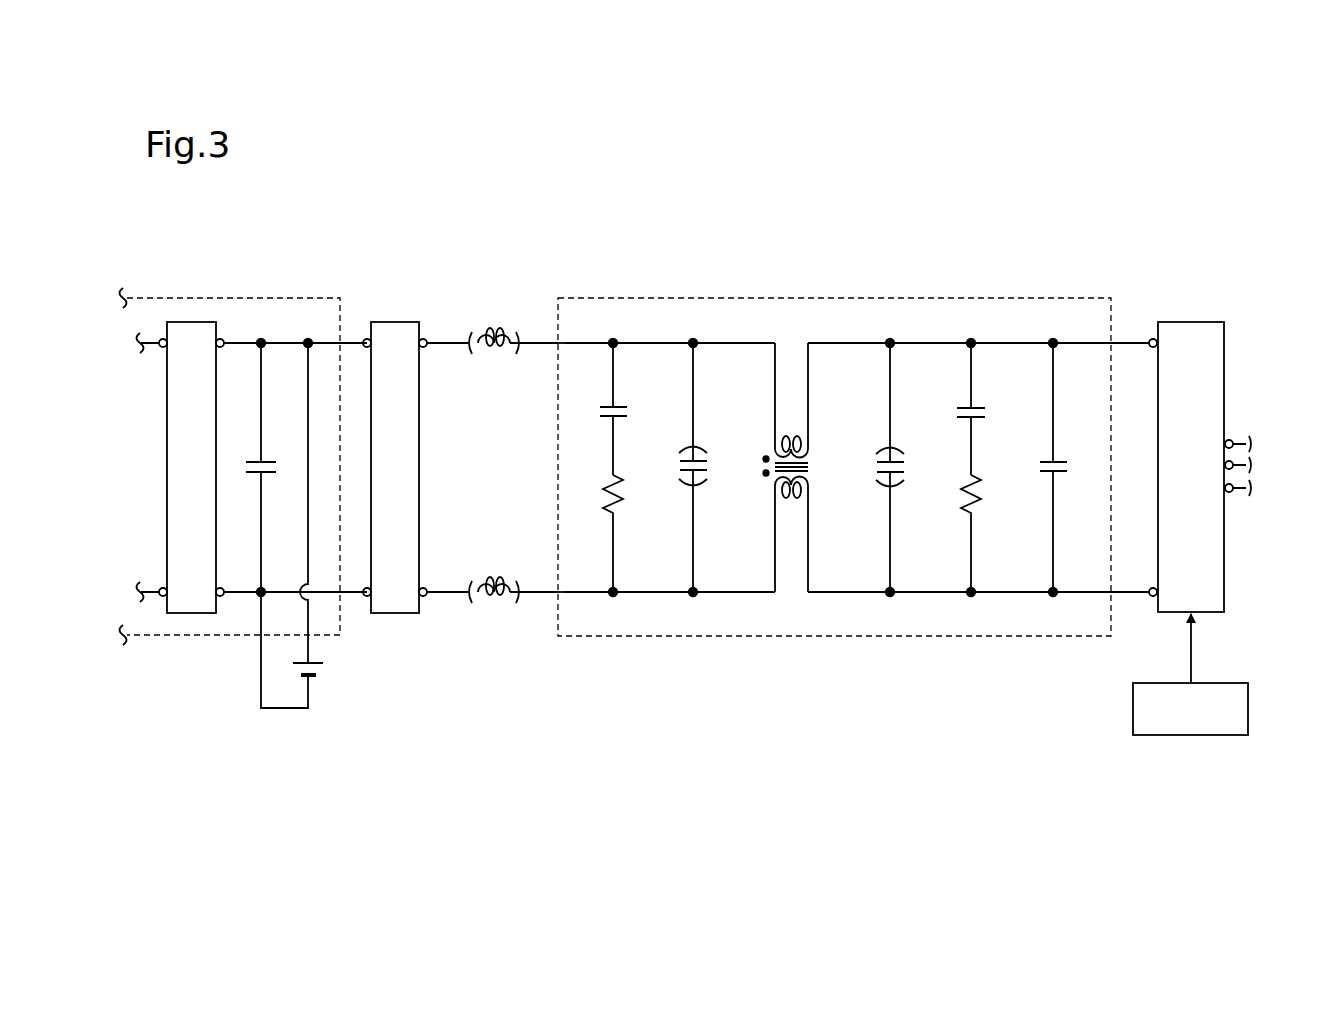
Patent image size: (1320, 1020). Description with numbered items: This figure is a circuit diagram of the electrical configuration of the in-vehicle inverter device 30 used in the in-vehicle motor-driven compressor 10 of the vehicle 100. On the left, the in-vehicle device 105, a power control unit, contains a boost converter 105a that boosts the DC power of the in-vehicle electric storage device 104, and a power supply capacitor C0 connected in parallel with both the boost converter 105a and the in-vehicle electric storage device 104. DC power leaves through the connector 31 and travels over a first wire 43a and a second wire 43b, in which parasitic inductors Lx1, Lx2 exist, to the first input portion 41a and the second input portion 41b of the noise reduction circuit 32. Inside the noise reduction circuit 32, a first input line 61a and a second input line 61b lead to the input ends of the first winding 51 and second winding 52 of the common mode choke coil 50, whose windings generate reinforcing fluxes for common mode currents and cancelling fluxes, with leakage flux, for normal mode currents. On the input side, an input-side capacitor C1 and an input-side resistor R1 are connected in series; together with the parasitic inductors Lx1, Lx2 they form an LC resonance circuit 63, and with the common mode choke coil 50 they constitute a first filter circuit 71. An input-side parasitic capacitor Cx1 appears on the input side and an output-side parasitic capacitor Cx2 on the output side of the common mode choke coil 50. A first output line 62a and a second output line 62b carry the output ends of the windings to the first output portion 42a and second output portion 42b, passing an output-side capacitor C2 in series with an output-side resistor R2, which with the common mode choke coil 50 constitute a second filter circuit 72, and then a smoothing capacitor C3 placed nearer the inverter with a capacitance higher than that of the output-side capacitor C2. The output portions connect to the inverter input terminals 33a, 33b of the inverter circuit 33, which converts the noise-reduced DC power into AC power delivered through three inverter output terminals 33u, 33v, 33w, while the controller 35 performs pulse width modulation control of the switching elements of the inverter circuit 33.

The in-vehicle motor-driven compressor 10 is at (1180, 227).
The vehicle 100 is at (931, 483).
The in-vehicle device 105 is at (312, 298).
The boost converter 105a is at (205, 322).
The in-vehicle electric storage device 104 is at (321, 663).
The power supply capacitor C0 is at (259, 473).
The connector 31 is at (400, 322).
The first wire 43a is at (450, 345).
The second wire 43b is at (449, 594).
The parasitic inductor Lx1 is at (496, 352).
The parasitic inductor Lx2 is at (488, 583).
The first input portion 41a is at (553, 343).
The second input portion 41b is at (553, 594).
The noise reduction circuit 32 is at (1072, 298).
The LC resonance circuit 63 is at (616, 321).
The first filter circuit 71 is at (696, 321).
The second filter circuit 72 is at (841, 323).
The input-side capacitor C1 is at (619, 406).
The input-side resistor R1 is at (606, 510).
The input-side parasitic capacitor Cx1 is at (700, 462).
The common mode choke coil 50 is at (793, 438).
The first winding 51 is at (800, 447).
The second winding 52 is at (800, 493).
The first input line 61a is at (722, 343).
The second input line 61b is at (733, 594).
The first output line 62a is at (983, 343).
The second output line 62b is at (990, 594).
The output-side parasitic capacitor Cx2 is at (896, 462).
The output-side capacitor C2 is at (979, 407).
The output-side resistor R2 is at (966, 511).
The smoothing capacitor C3 is at (1061, 462).
The first output portion 42a is at (1113, 341).
The second output portion 42b is at (1113, 595).
The in-vehicle inverter device 30 is at (1236, 300).
The inverter circuit 33 is at (1195, 322).
The inverter input terminal 33a is at (1150, 346).
The inverter input terminal 33b is at (1150, 590).
The inverter output terminal 33u is at (1232, 444).
The inverter output terminal 33v is at (1238, 466).
The inverter output terminal 33w is at (1233, 491).
The controller 35 is at (1232, 683).